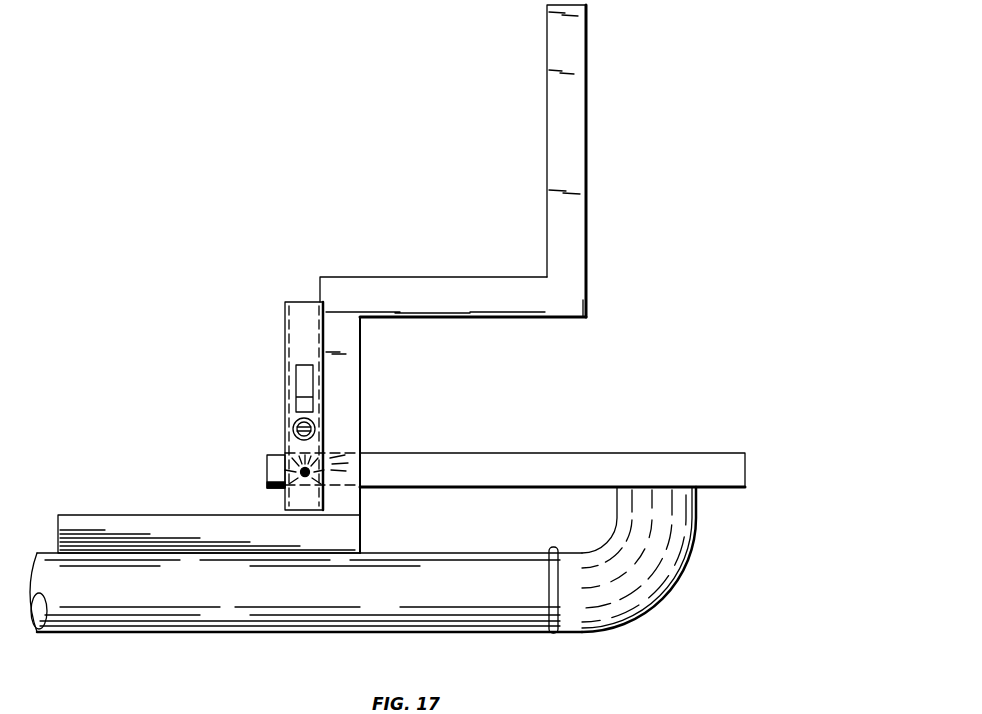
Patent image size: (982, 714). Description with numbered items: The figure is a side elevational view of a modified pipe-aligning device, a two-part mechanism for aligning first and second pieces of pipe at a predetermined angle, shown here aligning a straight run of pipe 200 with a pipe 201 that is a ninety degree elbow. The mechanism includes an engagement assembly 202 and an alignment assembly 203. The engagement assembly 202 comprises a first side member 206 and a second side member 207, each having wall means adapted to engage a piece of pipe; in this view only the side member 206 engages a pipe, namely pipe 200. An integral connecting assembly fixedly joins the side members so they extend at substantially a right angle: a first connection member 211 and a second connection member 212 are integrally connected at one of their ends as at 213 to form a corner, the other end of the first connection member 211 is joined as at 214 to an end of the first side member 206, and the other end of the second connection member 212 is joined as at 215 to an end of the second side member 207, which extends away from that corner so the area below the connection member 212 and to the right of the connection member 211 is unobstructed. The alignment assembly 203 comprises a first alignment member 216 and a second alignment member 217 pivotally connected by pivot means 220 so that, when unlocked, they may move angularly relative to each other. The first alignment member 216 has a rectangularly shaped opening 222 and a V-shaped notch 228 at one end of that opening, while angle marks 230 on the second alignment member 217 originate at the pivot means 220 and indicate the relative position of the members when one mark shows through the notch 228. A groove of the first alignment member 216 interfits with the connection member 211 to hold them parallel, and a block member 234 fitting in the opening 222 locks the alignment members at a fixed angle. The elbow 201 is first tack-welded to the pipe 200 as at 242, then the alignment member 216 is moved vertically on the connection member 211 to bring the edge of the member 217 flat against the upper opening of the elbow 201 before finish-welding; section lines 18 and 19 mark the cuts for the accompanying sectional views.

The section line 18- 18 is at (172, 430).
The section line 19- 19 is at (278, 233).
The pipe 200 is at (220, 616).
The pipe elbow 201 is at (648, 568).
The engagement assembly 202 is at (460, 393).
The alignment assembly 203 is at (291, 410).
The first side member 206 is at (92, 525).
The second side member 207 is at (577, 170).
The first connection member 211 is at (343, 399).
The second connection member 212 is at (453, 303).
The integral connection of connection members 213 is at (331, 288).
The integral connection to first side member 214 is at (342, 535).
The integral connection to second side member 215 is at (566, 299).
The first alignment member 216 is at (300, 352).
The second alignment member 217 is at (536, 458).
The pivot means 220 is at (310, 478).
The rectangularly shaped opening 222 is at (298, 383).
The V-shaped notch 228 is at (305, 458).
The angle marks 230 is at (278, 459).
The block member 234 is at (308, 409).
The tack weld 242 is at (555, 633).